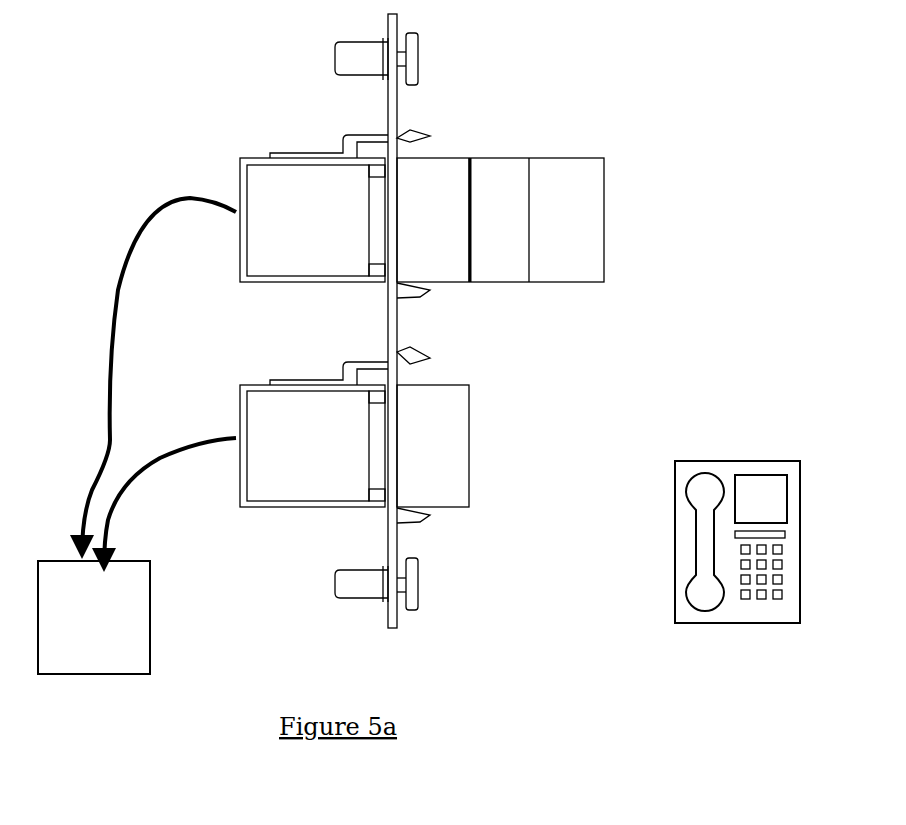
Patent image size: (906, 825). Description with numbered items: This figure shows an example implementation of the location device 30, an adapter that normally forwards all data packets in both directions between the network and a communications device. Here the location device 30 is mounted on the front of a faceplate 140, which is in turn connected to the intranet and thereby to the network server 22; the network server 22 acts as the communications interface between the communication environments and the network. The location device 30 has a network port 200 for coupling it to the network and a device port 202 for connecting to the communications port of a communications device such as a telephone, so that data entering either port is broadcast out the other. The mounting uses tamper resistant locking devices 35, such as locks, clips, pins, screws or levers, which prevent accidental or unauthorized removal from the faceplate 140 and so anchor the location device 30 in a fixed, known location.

The network server 22 is at (94, 617).
The location device 30 is at (484, 276).
The tamper resistant locking device 35 is at (400, 285).
The faceplate 140 is at (400, 625).
The network port 200 is at (433, 220).
The device port 202 is at (712, 458).